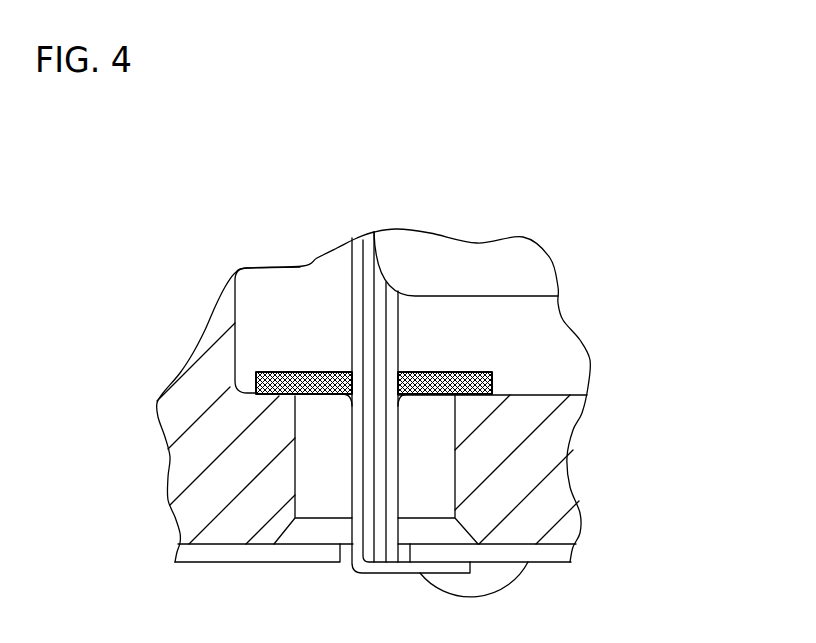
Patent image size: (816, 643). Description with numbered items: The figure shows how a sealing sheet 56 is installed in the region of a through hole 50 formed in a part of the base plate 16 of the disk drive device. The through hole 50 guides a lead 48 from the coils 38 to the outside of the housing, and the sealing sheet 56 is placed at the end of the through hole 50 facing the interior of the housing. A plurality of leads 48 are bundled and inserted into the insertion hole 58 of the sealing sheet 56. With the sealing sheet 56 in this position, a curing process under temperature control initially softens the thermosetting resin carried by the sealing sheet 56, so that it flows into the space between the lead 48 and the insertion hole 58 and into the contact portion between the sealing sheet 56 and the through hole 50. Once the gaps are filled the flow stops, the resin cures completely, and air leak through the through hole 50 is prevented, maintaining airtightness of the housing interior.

The base plate 16 is at (557, 517).
The coils 38 is at (487, 263).
The lead 48 is at (352, 300).
The through hole 50 is at (458, 438).
The sealing sheet 56 is at (255, 383).
The insertion hole 58 is at (398, 395).